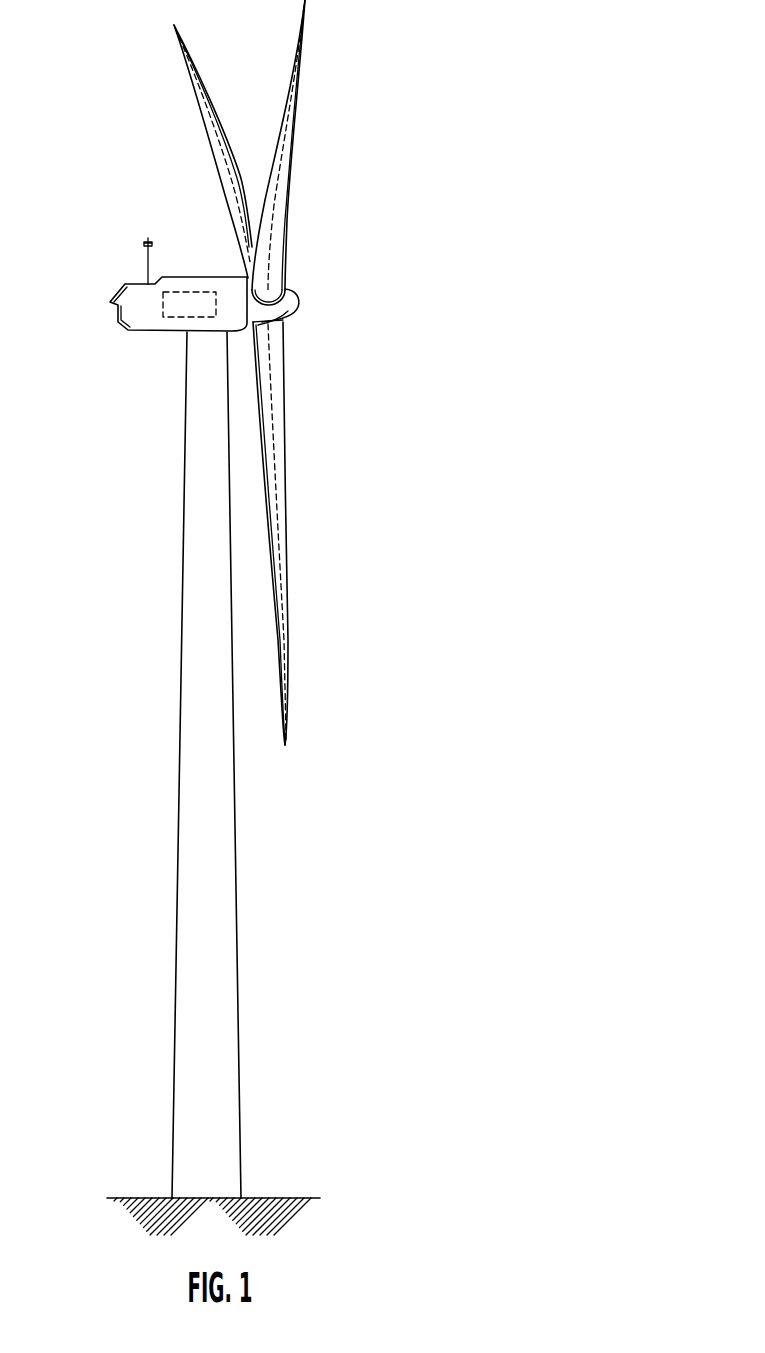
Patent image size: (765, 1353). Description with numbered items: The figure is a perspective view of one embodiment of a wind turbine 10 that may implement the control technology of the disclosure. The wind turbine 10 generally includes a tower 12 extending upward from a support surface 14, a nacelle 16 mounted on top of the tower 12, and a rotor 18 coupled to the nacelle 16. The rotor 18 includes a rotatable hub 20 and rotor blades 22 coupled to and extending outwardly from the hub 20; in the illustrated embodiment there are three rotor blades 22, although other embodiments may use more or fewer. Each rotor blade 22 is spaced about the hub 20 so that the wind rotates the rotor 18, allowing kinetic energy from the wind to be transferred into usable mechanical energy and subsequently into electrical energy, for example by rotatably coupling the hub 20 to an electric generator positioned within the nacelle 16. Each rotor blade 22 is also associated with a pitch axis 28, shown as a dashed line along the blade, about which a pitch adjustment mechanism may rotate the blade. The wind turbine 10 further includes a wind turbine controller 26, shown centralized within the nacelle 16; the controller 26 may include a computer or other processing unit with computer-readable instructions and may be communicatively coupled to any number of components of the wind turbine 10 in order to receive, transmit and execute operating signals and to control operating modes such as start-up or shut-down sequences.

The wind turbine 10 is at (443, 103).
The tower 12 is at (218, 834).
The support surface 14 is at (150, 1198).
The nacelle 16 is at (158, 333).
The rotor 18 is at (348, 232).
The rotatable hub 20 is at (300, 297).
The rotor blade 22 is at (287, 122).
The wind turbine controller 26 is at (200, 290).
The pitch axis 28 is at (220, 170).